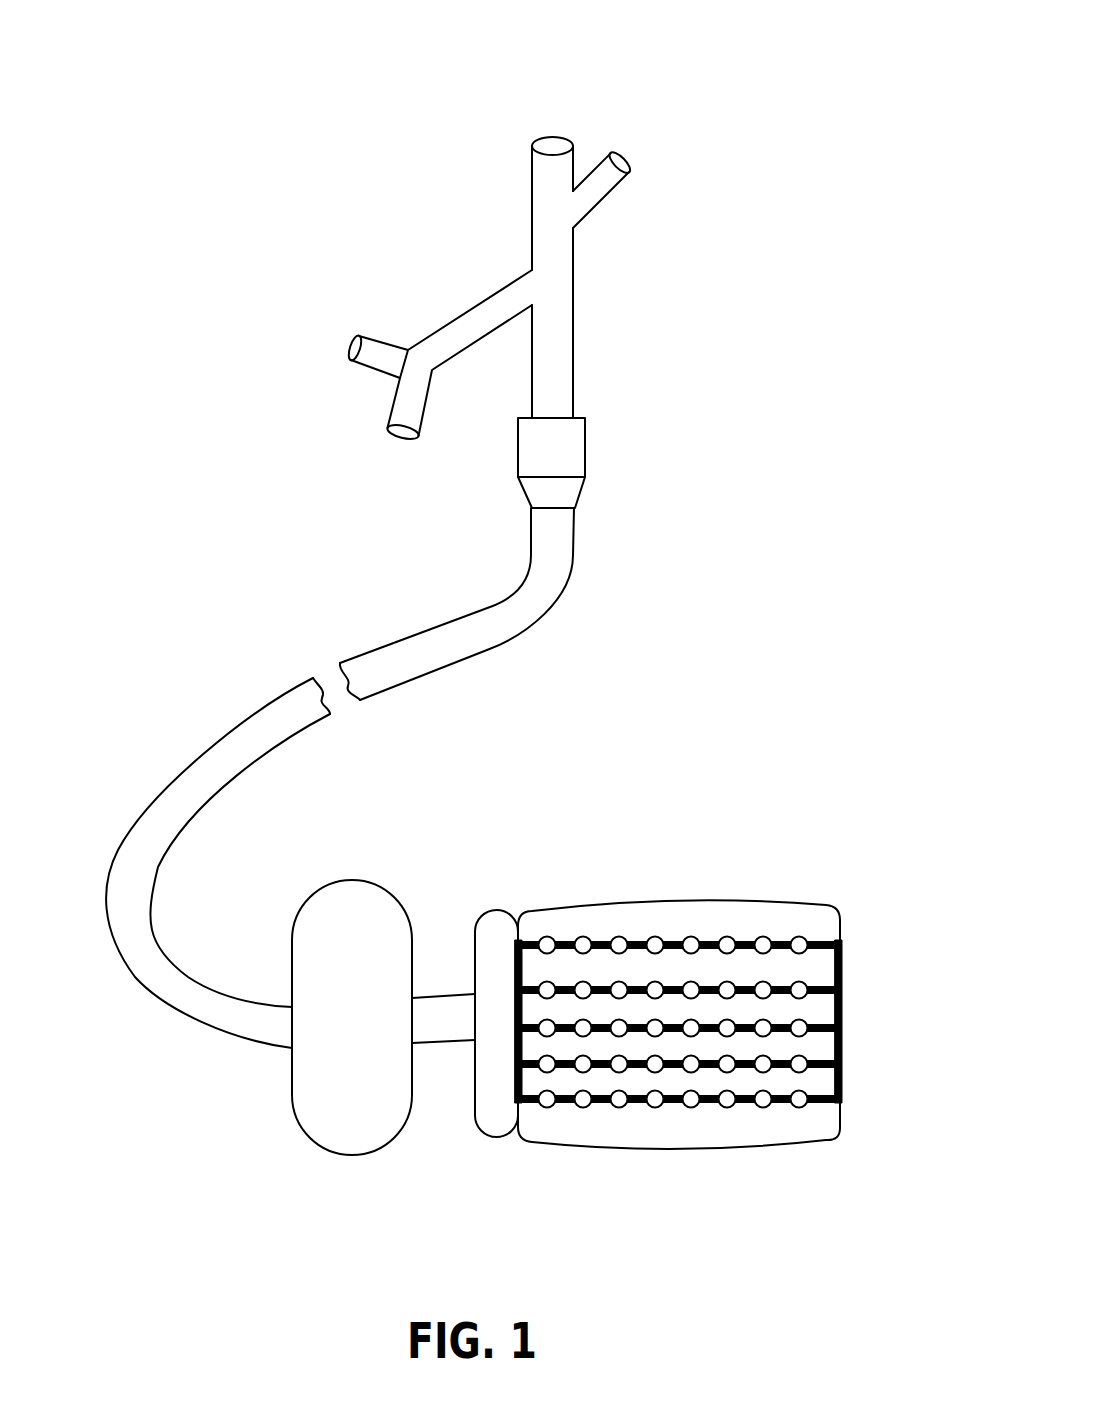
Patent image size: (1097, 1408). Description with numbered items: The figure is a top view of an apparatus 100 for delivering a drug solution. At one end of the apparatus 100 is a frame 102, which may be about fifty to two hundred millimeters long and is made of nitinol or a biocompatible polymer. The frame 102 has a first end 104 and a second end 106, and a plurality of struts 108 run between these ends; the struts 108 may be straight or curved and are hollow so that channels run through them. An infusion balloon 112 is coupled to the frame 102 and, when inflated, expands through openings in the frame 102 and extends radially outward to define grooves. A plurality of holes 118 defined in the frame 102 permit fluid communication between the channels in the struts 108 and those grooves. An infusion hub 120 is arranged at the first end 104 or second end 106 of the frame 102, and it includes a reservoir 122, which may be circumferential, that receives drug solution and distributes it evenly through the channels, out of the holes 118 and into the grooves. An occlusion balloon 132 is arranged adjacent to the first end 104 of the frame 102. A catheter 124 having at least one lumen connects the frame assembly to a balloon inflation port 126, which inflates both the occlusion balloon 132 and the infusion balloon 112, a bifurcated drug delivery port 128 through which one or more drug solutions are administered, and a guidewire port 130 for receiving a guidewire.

The apparatus 100 is at (813, 77).
The frame 102 is at (838, 1078).
The first end 104 is at (511, 1072).
The second end 106 is at (845, 988).
The struts 108 is at (600, 946).
The infusion balloon 112 is at (748, 901).
The holes 118 is at (655, 937).
The infusion hub 120 is at (500, 911).
The reservoir 122 is at (502, 1107).
The catheter 124 is at (393, 646).
The balloon inflation port 126 is at (623, 169).
The drug delivery port 128 is at (351, 347).
The guidewire port 130 is at (557, 141).
The occlusion balloon 132 is at (352, 879).